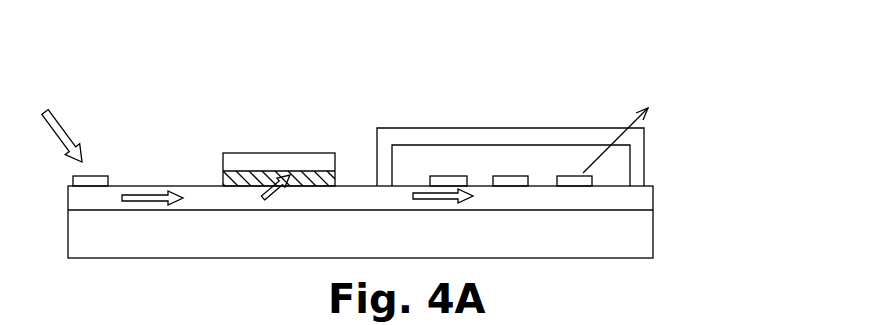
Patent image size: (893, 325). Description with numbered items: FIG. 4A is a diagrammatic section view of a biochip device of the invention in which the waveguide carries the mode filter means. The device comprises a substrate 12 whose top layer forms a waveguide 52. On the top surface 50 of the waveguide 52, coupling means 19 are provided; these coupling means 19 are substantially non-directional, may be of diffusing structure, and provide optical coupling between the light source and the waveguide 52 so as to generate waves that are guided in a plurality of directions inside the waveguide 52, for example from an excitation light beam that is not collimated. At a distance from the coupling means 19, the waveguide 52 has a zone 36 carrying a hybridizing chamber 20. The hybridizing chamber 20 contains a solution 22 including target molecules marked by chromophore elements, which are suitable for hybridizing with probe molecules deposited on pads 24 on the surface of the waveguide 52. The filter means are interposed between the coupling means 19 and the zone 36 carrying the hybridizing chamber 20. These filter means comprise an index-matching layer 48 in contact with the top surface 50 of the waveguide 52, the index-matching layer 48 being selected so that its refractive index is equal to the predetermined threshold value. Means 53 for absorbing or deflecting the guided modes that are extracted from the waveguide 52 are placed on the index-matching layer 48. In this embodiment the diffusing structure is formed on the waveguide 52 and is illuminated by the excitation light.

The substrate 12 is at (643, 233).
The waveguide 52 is at (643, 197).
The top surface of the waveguide 50 is at (192, 185).
The coupling means 19 is at (100, 176).
The means for absorbing or deflecting the guided modes 53 is at (287, 158).
The index-matching layer 48 is at (333, 178).
The hybridizing chamber 20 is at (437, 138).
The solution 22 is at (532, 160).
The pads 24 is at (452, 181).
The zone of the waveguide carrying the hybridizing chamber 36 is at (586, 107).